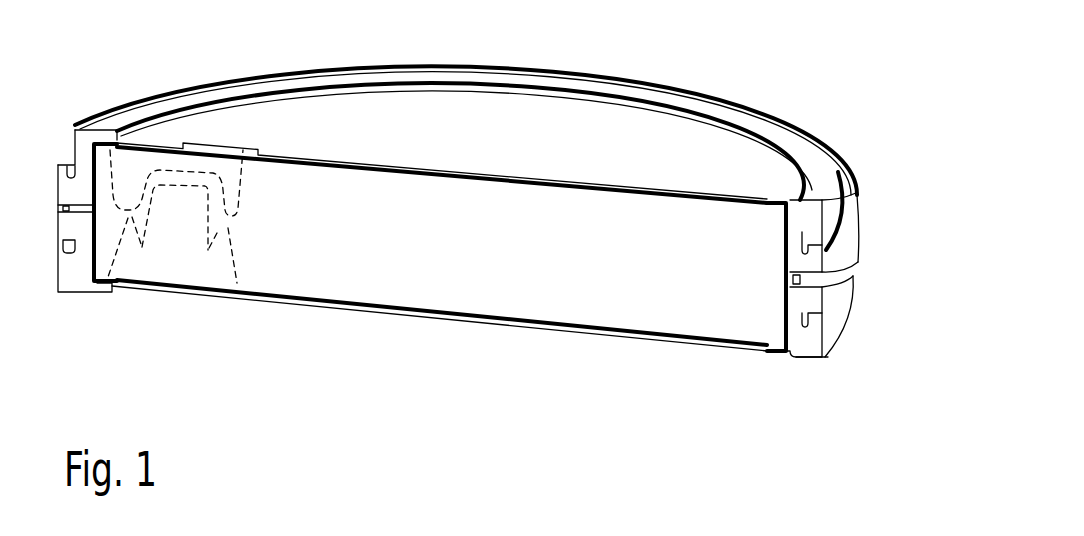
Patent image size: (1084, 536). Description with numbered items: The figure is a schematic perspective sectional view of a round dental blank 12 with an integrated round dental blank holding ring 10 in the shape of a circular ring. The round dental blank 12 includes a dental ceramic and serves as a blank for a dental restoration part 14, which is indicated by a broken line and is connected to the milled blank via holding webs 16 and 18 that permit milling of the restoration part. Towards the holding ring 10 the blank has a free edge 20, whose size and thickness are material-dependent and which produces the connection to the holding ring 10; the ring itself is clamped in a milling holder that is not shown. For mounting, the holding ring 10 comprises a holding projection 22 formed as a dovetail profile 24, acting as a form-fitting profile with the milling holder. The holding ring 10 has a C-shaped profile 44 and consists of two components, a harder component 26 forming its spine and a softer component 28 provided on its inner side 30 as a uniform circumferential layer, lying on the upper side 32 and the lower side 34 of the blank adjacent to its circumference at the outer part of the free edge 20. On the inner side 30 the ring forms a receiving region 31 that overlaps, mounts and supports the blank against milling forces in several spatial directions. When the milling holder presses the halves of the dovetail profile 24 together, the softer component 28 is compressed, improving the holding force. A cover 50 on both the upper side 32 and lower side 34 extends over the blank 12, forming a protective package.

The round dental blank holding ring 10 is at (779, 128).
The round dental blank 12 is at (511, 290).
The dental restoration part 14 is at (184, 175).
The holding web 16 is at (127, 218).
The holding web 18 is at (227, 230).
The free edge 20 is at (103, 157).
The holding projection 22 is at (886, 226).
The dovetail profile 24 is at (836, 292).
The harder component 26 is at (827, 205).
The softer component 28 is at (793, 345).
The inner side 30 is at (762, 248).
The receiving region 31 is at (762, 302).
The upper side 32 is at (499, 115).
The lower side 34 is at (406, 336).
The C-shaped profile 44 is at (65, 312).
The cover 50 is at (398, 110).